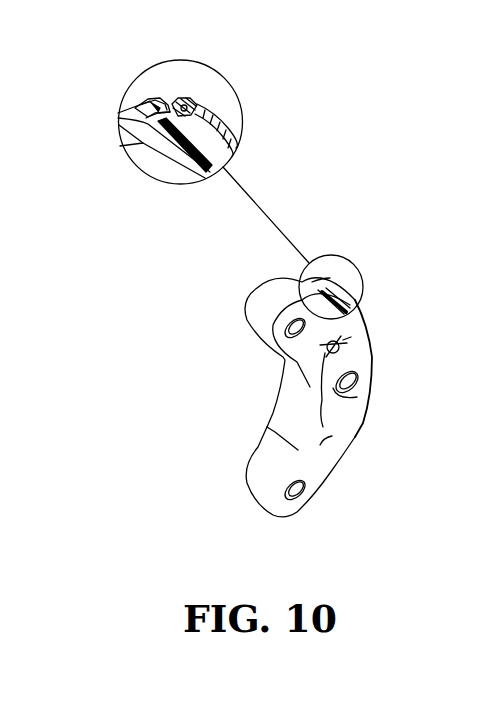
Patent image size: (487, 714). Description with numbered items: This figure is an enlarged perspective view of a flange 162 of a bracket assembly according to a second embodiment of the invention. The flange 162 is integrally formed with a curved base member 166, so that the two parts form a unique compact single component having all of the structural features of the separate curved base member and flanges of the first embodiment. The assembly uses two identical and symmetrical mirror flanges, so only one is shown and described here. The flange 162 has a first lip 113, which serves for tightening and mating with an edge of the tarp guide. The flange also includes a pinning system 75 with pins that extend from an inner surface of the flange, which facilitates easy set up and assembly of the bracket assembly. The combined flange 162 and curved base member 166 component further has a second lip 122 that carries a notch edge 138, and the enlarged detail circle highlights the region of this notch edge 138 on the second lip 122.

The first lip 113 is at (147, 100).
The notch edge 138 is at (187, 108).
The second lip 122 is at (222, 128).
The flange 162 is at (368, 325).
The curved base member 166 is at (272, 448).
The pinning system 75 is at (320, 445).